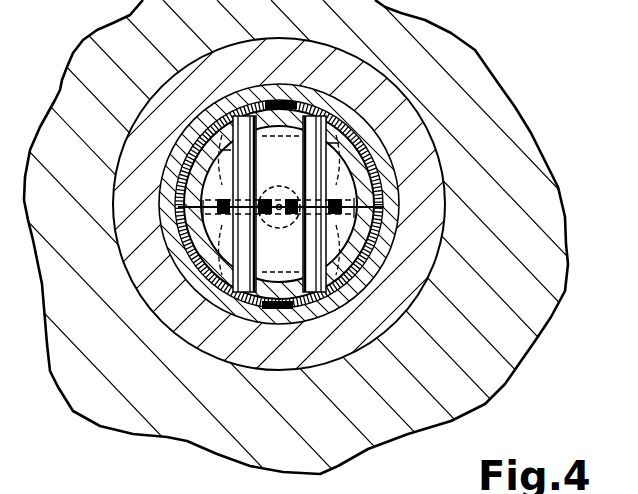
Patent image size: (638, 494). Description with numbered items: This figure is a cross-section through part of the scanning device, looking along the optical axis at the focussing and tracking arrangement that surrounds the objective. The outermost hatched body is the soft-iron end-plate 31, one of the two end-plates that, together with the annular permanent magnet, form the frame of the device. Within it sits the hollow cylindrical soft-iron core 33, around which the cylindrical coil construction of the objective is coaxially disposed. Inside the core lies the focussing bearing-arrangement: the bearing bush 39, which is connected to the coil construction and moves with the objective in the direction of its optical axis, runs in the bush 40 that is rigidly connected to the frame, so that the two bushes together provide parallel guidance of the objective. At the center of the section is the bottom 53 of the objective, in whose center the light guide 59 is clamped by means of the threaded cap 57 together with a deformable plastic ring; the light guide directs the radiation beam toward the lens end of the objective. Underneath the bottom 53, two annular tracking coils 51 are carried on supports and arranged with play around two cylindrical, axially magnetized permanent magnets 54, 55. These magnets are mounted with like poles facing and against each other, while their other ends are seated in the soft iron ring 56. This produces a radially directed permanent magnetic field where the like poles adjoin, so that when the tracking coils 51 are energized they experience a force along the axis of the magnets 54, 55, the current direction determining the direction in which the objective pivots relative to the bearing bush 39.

The soft-iron end-plate 31 is at (97, 385).
The hollow cylindrical soft-iron core 33 is at (357, 330).
The bearing bush 39 is at (343, 173).
The bush 40 is at (254, 313).
The annular tracking coils 51 is at (215, 207).
The bottom of the objective 53 is at (272, 104).
The cylindrical axially magnetized permanent magnet 54 is at (232, 163).
The cylindrical axially magnetized permanent magnet 55 is at (245, 243).
The soft iron ring 56 is at (358, 236).
The threaded cap 57 is at (283, 228).
The light guide 59 is at (276, 188).